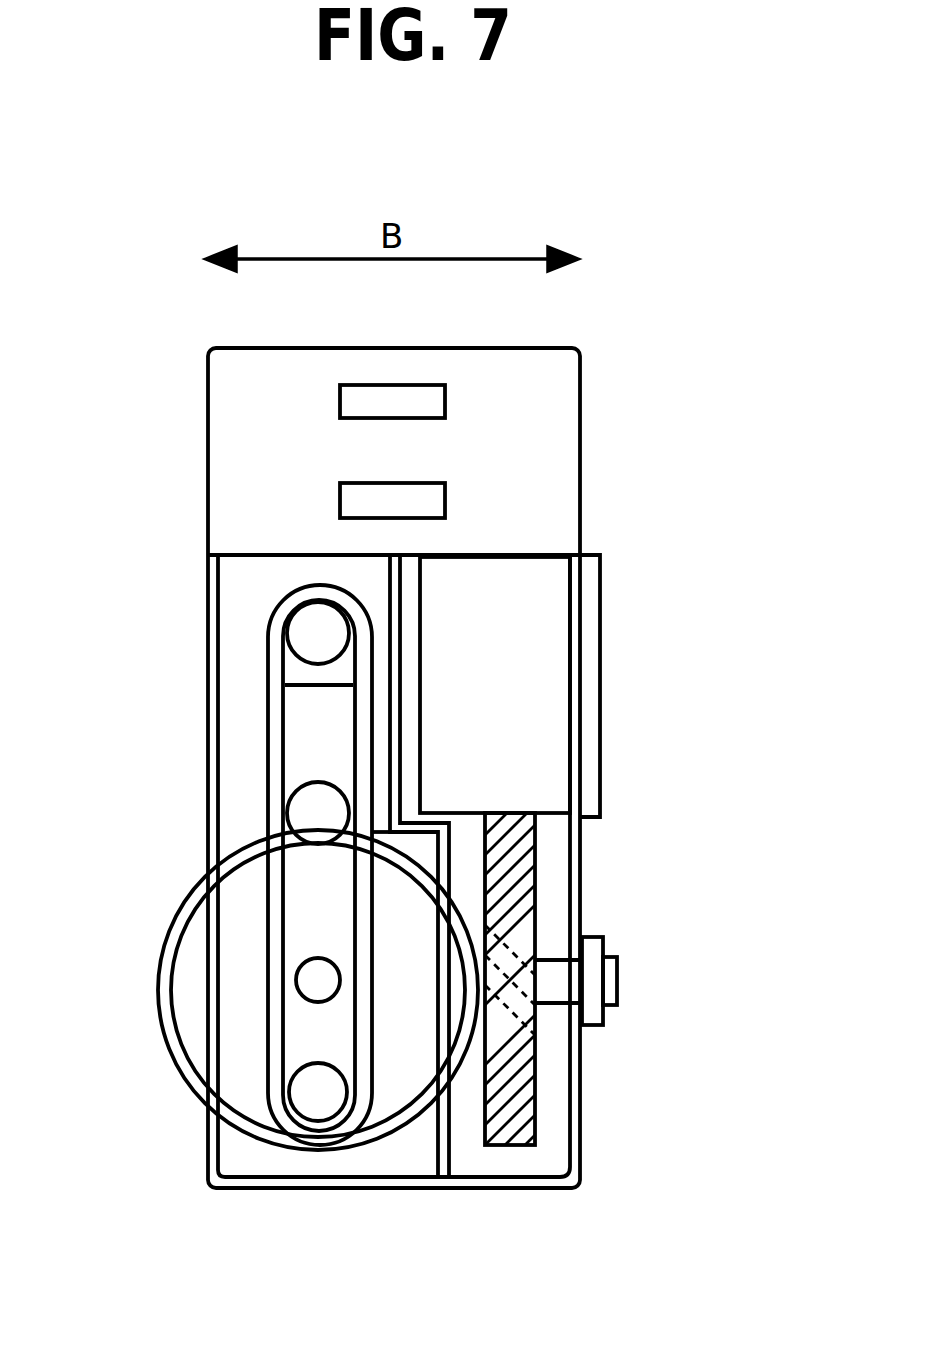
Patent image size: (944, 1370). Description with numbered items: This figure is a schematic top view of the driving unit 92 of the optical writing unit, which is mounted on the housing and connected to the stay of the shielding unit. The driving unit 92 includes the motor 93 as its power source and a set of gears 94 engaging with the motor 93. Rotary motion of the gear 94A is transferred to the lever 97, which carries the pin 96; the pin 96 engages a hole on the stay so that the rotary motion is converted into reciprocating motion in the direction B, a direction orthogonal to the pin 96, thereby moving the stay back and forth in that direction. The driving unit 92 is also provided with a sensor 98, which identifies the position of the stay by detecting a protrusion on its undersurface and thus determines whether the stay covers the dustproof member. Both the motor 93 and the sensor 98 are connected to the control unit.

The driving unit 92 is at (700, 368).
The motor 93 is at (555, 640).
The set of gears 94 is at (140, 900).
The gear 94A is at (158, 950).
The pin 96 is at (295, 804).
The lever 97 is at (295, 712).
The sensor 98 is at (350, 401).